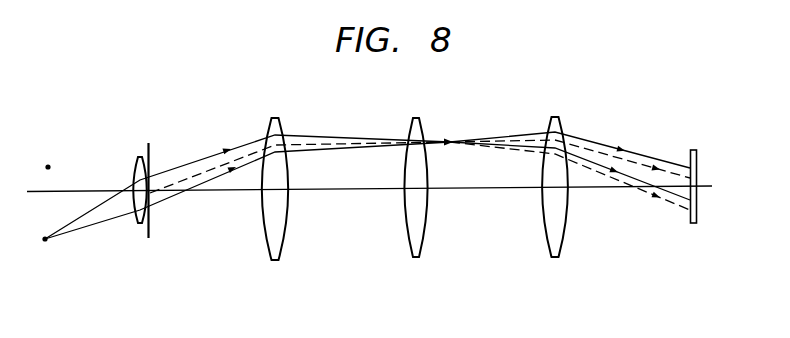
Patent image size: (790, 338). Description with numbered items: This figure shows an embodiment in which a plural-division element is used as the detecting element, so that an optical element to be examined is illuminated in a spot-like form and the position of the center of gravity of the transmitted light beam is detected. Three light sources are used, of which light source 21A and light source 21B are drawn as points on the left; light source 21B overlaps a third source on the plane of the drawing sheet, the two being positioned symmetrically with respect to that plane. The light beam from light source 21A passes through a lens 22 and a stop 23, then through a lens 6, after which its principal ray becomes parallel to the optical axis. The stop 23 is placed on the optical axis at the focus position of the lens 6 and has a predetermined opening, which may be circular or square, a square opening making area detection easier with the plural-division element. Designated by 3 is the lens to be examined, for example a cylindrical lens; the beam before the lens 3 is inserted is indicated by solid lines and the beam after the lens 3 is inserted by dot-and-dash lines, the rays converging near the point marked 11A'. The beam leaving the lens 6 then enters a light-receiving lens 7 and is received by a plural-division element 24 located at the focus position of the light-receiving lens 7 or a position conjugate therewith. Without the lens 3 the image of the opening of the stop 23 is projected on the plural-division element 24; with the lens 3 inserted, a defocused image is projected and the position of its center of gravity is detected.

The light source 21A is at (45, 239).
The light source 21B is at (48, 167).
The lens 22 is at (139, 157).
The stop 23 is at (151, 161).
The lens 6 is at (277, 118).
The lens to be examined 3 is at (413, 118).
The image point 11A' is at (447, 115).
The light-receiving lens 7 is at (555, 117).
The plural-division element 24 is at (695, 150).